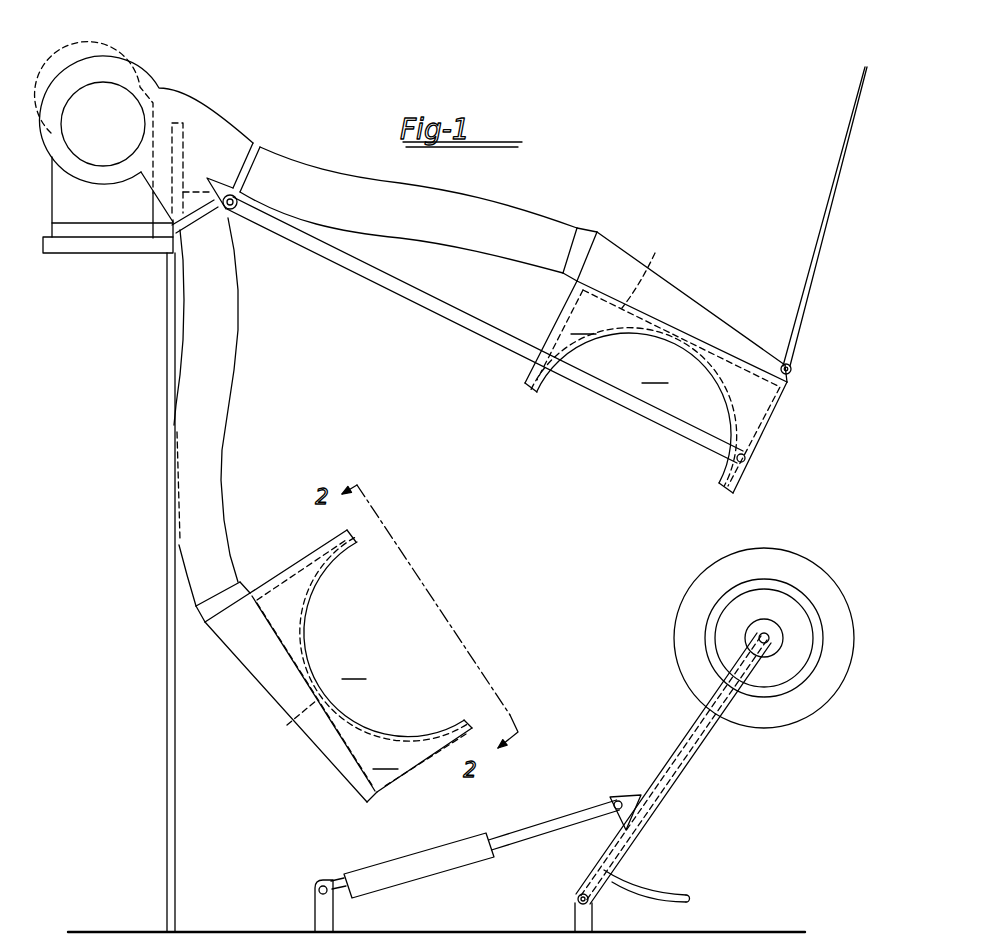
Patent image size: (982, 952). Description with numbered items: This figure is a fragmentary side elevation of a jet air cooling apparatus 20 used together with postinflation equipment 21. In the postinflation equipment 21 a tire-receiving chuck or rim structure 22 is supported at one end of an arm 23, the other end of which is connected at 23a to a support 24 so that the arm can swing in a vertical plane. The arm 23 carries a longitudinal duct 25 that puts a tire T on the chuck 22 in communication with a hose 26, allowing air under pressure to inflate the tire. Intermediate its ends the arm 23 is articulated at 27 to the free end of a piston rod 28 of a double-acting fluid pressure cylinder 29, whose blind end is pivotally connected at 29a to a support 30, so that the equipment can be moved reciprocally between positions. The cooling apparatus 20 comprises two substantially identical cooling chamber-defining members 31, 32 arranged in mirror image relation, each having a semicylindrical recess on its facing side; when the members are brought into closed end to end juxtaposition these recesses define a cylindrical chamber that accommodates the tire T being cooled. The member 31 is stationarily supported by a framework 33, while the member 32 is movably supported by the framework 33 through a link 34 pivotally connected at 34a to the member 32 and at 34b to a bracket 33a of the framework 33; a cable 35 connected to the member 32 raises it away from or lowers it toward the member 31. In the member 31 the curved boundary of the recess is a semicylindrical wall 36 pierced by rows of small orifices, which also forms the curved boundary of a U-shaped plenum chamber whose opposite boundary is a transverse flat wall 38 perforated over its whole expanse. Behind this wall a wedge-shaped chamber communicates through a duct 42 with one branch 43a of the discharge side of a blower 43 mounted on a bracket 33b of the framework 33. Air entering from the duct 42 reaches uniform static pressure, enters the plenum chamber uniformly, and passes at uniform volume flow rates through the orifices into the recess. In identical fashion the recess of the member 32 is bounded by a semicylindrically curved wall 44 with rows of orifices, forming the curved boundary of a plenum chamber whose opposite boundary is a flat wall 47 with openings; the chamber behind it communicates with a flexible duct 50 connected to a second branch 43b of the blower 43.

The jet air cooling apparatus 20 is at (610, 201).
The postinflation equipment 21 is at (730, 828).
The tire-receiving chuck or rim structure 22 is at (772, 682).
The arm 23 is at (683, 773).
The pivotal connection 23a is at (577, 901).
The support 24 is at (595, 920).
The longitudinal duct 25 is at (683, 745).
The hose 26 is at (676, 898).
The articulation 27 is at (613, 800).
The piston rod 28 is at (547, 828).
The double-acting fluid pressure cylinder 29 is at (412, 870).
The pivotal connection 29a is at (325, 883).
The support 30 is at (315, 912).
The cooling chamber-defining member 31 is at (285, 568).
The cooling chamber-defining member 32 is at (770, 432).
The framework 33 is at (176, 788).
The bracket 33a is at (233, 193).
The bracket 33b is at (72, 249).
The link 34 is at (397, 290).
The pivotal connection 34a is at (746, 465).
The pivotal connection 34b is at (235, 215).
The cable 35 is at (803, 313).
The semicylindrical wall 36 is at (312, 627).
The transverse flat wall 38 is at (287, 721).
The duct 42 is at (229, 398).
The blower 43 is at (148, 68).
The branch 43a is at (153, 196).
The branch 43b is at (230, 135).
The semicylindrically curved wall 44 is at (727, 417).
The flat wall 47 is at (641, 278).
The flexible duct 50 is at (532, 213).
The tire T is at (828, 572).